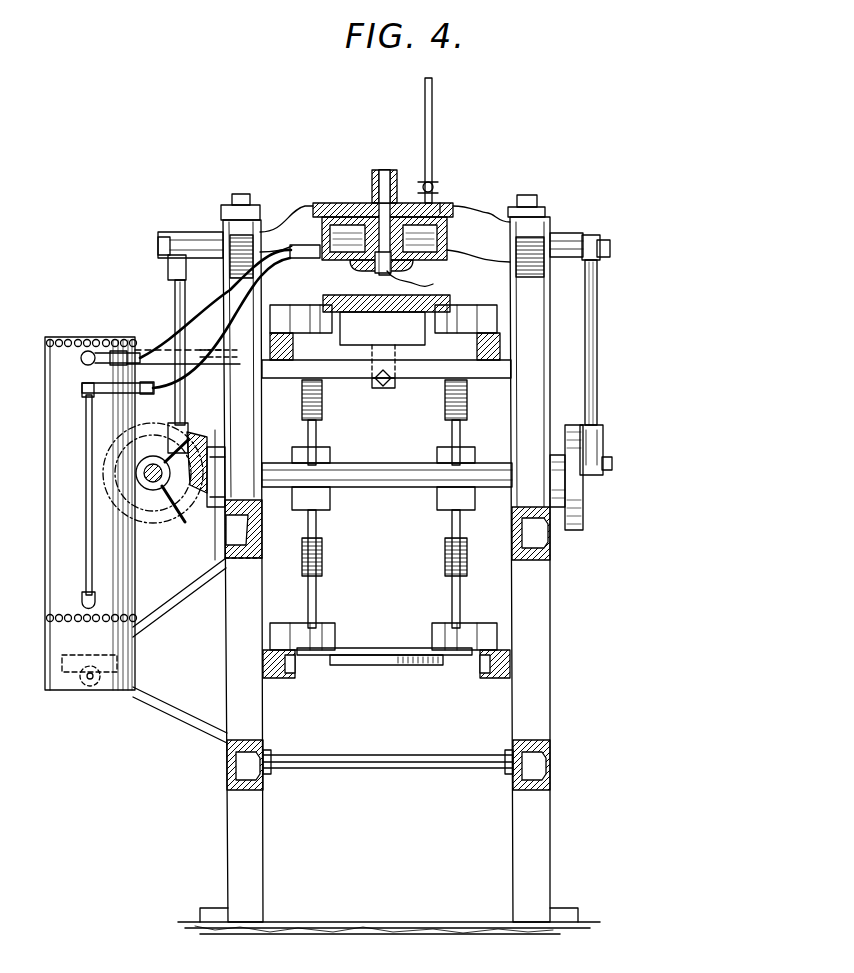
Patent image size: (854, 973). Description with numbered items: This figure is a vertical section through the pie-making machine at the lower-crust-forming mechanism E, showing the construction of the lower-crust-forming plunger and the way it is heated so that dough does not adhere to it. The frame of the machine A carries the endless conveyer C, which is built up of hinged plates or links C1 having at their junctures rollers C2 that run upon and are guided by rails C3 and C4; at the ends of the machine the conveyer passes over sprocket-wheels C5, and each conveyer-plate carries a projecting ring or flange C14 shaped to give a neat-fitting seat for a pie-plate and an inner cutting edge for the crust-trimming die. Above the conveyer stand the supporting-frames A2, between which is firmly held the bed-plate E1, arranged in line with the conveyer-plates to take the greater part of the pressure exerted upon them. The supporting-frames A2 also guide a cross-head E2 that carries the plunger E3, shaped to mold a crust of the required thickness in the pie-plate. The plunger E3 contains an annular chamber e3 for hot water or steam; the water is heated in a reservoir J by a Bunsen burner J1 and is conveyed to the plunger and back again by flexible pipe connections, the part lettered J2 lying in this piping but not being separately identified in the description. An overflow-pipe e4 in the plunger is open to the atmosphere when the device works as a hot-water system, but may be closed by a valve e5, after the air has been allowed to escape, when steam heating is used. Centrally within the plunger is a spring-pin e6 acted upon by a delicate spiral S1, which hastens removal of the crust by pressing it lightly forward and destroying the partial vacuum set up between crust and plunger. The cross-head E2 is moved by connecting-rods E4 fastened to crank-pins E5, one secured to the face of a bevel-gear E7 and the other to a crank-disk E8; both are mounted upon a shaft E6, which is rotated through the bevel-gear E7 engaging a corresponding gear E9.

The frame A is at (242, 687).
The supporting-frames A2 is at (538, 345).
The endless conveyer C is at (386, 473).
The plates or links C1 is at (347, 652).
The rollers C2 is at (282, 312).
The rails C3 is at (303, 390).
The rails C4 is at (442, 308).
The sprocket-wheels C5 is at (312, 433).
The projecting ring or flange C14 is at (357, 313).
The lower-crust-forming mechanism E is at (382, 137).
The bed-plate E1 is at (410, 333).
The cross-head E2 is at (467, 213).
The plunger E3 is at (318, 227).
The connecting-rods E4 is at (173, 307).
The crank-pins E5 is at (187, 448).
The shaft E6 is at (398, 490).
The bevel-gear E7 is at (203, 500).
The crank-disk E8 is at (575, 532).
The gear E9 is at (147, 530).
The spiral S1 is at (367, 207).
The annular chamber e3 is at (443, 203).
The overflow-pipe e4 is at (432, 93).
The valve e5 is at (443, 187).
The spring-pin e6 is at (422, 282).
The reservoir J is at (70, 518).
The Bunsen burner J1 is at (63, 675).
The pipe J2 is at (233, 293).